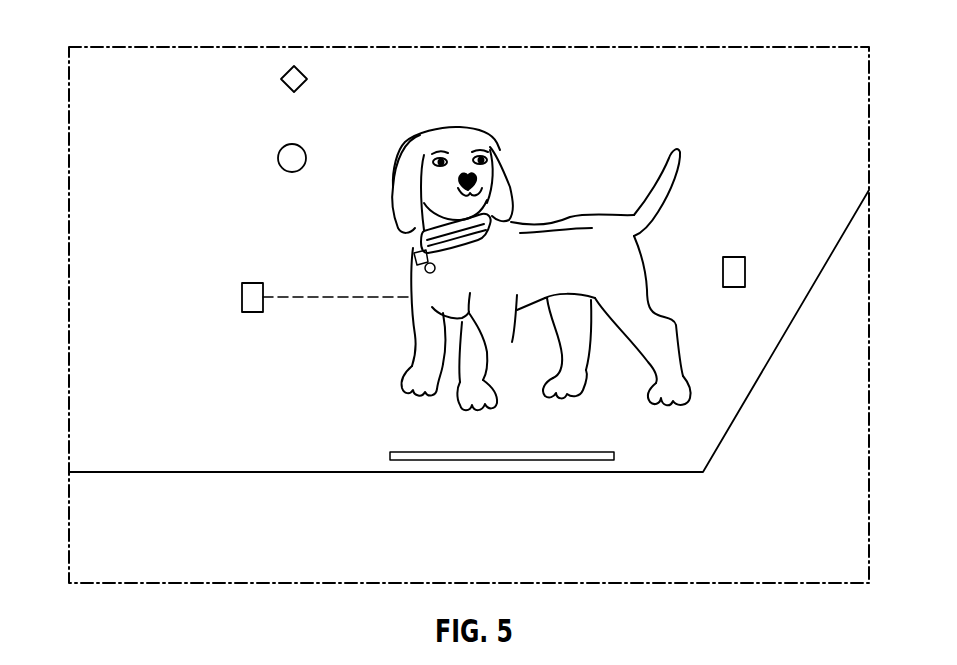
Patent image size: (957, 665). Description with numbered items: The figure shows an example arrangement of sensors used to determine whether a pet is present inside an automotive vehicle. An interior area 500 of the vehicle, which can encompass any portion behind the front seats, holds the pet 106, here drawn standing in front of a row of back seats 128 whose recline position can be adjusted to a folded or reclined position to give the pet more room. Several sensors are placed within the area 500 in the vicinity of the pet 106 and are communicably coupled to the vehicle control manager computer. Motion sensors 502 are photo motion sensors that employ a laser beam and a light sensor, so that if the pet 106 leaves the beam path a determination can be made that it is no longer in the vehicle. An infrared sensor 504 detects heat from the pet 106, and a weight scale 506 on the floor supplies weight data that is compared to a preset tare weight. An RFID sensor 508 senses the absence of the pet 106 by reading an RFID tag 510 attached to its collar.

The area 500 is at (137, 35).
The pet 106 is at (510, 268).
The rows of back seats 128 is at (718, 395).
The motion sensors 502 is at (242, 297).
The infrared sensor 504 is at (277, 161).
The weight scale 506 is at (553, 457).
The RFID sensor 508 is at (287, 83).
The RFID tag 510 is at (425, 265).